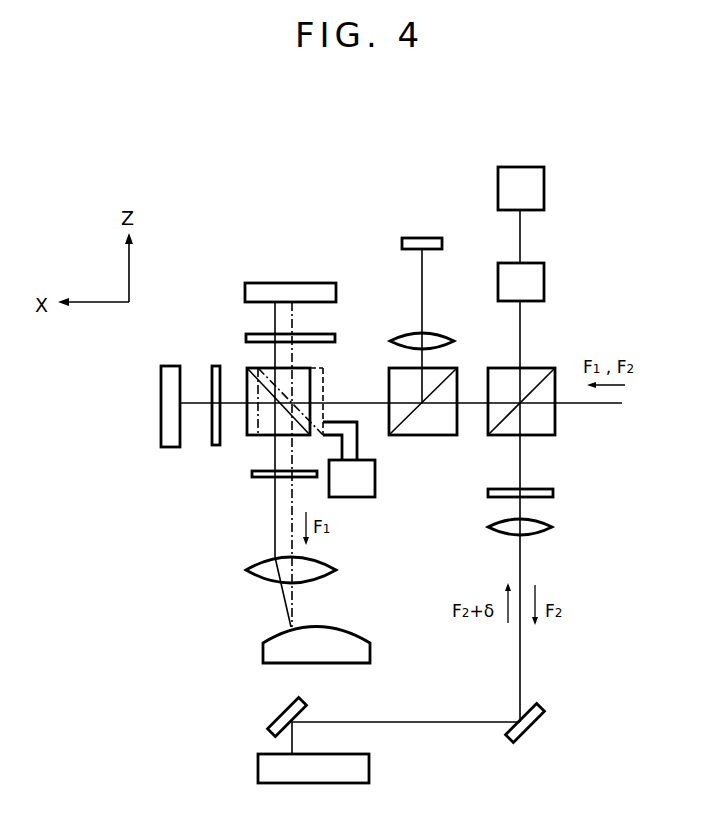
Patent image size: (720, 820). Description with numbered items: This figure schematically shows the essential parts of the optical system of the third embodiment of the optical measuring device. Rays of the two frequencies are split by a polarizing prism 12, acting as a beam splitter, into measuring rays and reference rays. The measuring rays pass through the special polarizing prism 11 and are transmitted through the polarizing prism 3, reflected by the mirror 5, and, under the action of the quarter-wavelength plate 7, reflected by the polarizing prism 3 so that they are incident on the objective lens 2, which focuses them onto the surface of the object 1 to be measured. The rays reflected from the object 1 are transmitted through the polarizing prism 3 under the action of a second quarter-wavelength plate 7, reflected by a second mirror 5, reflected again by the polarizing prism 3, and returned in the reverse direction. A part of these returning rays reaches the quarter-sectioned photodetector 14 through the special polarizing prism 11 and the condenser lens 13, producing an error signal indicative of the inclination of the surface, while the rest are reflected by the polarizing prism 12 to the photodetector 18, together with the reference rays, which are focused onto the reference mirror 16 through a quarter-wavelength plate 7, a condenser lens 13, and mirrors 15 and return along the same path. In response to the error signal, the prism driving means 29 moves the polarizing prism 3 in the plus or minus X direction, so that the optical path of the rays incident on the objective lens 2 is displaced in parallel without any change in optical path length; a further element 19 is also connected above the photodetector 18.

The object to be measured 1 is at (371, 652).
The objective lens 2 is at (336, 572).
The polarizing prism 3 is at (250, 440).
The mirror 5 is at (160, 378).
The quarter-wavelength plate 7 is at (246, 338).
The special polarizing prism 11 is at (418, 437).
The polarizing prism 12 is at (556, 421).
The condenser lens 13 is at (437, 334).
The quarter-sectioned photodetector 14 is at (433, 238).
The mirror 15 is at (270, 722).
The reference mirror 16 is at (370, 772).
The photodetector 18 is at (544, 280).
The Z-signal processing unit 19 is at (544, 185).
The prism driving means 29 is at (376, 482).